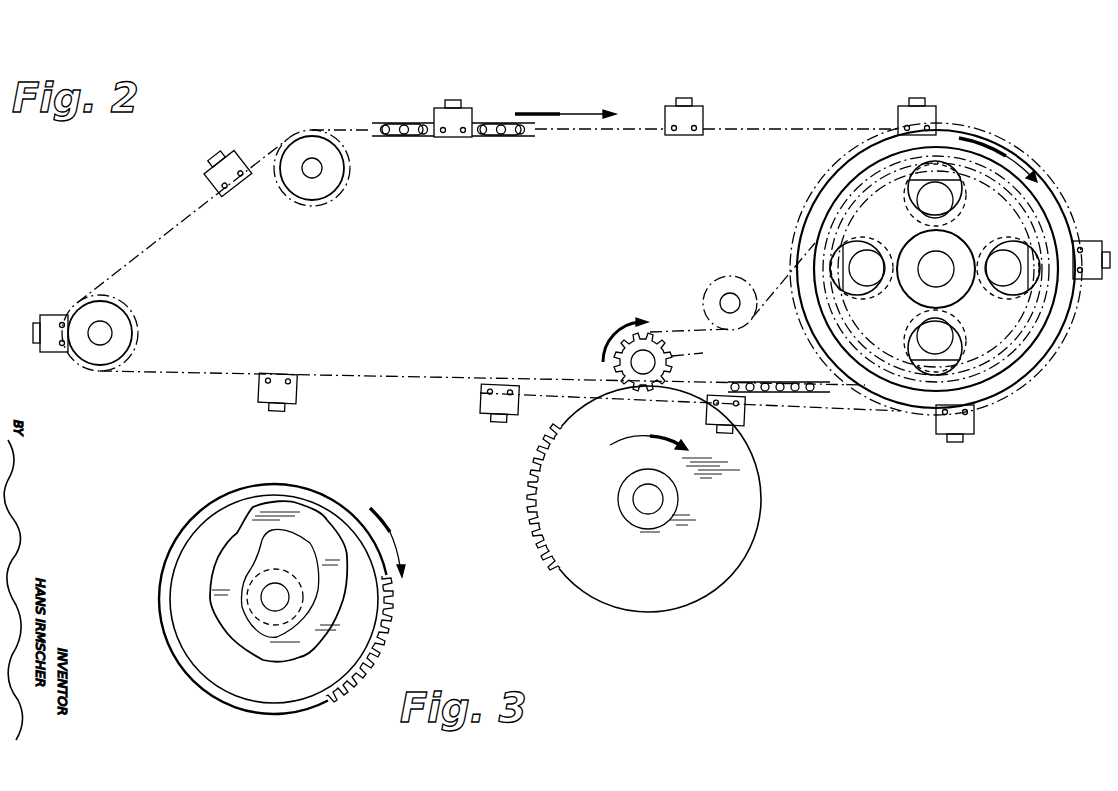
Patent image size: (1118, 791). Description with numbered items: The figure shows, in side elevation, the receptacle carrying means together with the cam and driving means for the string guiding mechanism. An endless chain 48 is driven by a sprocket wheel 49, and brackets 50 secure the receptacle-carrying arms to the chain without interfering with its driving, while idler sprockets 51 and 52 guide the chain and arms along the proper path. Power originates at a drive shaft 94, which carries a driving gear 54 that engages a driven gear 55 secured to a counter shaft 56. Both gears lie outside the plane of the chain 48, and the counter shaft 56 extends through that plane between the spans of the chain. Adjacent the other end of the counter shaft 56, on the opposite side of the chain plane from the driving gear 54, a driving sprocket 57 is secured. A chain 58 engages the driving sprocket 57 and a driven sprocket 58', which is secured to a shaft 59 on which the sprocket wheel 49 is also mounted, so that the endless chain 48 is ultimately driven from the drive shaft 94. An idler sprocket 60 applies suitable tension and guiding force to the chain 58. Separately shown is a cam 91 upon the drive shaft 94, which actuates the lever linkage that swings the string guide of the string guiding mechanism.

In FIG. 2, the endless chain 48 is at (394, 126).
In FIG. 2, the sprocket wheel 49 is at (838, 160).
In FIG. 2, the brackets 50 is at (210, 186).
In FIG. 2, the idler sprocket 51 is at (118, 330).
In FIG. 2, the idler sprocket 52 is at (318, 180).
In FIG. 2, the driving gear 54 is at (744, 511).
In FIG. 3, the driving gear 54 is at (287, 488).
In FIG. 2, the driven gear 55 is at (618, 362).
In FIG. 2, the counter shaft 56 is at (650, 355).
In FIG. 2, the driving sprocket 57 is at (700, 355).
In FIG. 2, the chain 58 is at (779, 305).
In FIG. 2, the driven sprocket 58' is at (936, 218).
In FIG. 2, the shaft 59 is at (946, 260).
In FIG. 2, the idler sprocket 60 is at (716, 288).
In FIG. 3, the cam 91 is at (208, 537).
In FIG. 2, the drive shaft 94 is at (645, 507).
In FIG. 3, the drive shaft 94 is at (262, 605).